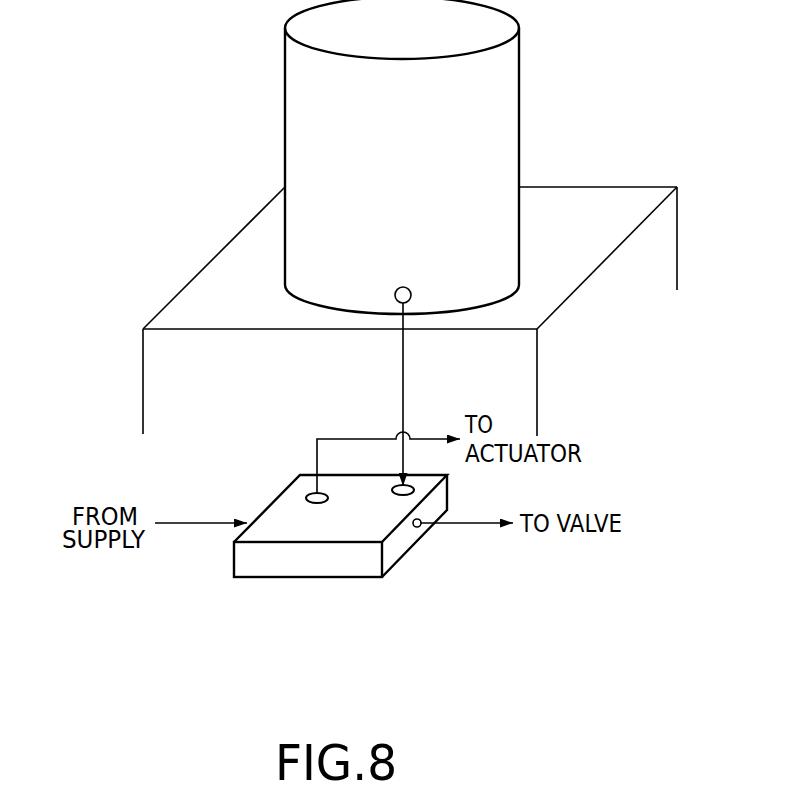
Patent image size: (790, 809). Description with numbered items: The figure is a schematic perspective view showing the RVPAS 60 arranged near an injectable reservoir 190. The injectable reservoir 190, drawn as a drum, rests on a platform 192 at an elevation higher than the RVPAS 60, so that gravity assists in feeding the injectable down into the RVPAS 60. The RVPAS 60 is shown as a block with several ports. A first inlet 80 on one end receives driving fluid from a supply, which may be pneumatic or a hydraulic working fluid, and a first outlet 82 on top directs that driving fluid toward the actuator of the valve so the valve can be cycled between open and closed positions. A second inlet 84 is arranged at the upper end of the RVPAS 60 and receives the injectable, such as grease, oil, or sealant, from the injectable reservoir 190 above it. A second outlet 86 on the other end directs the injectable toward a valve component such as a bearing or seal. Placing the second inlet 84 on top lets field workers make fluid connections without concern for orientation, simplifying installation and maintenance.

The injectable reservoir 190 is at (418, 183).
The platform 192 is at (182, 288).
The RVPAS 60 is at (334, 488).
The first inlet 80 is at (243, 507).
The first outlet 82 is at (303, 512).
The second inlet 84 is at (368, 468).
The second outlet 86 is at (410, 545).